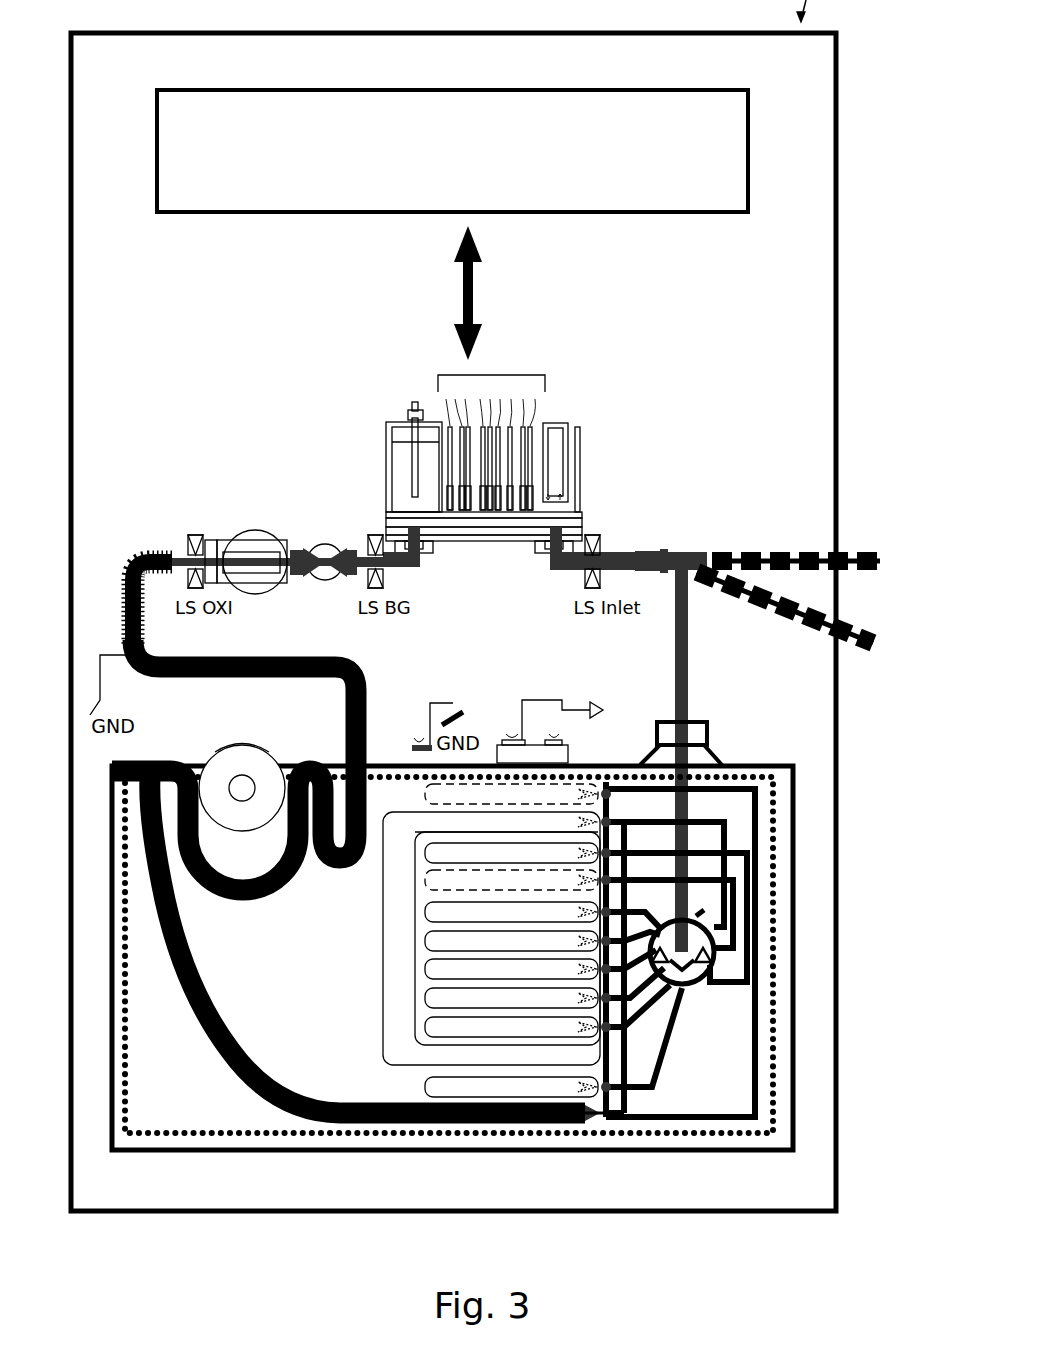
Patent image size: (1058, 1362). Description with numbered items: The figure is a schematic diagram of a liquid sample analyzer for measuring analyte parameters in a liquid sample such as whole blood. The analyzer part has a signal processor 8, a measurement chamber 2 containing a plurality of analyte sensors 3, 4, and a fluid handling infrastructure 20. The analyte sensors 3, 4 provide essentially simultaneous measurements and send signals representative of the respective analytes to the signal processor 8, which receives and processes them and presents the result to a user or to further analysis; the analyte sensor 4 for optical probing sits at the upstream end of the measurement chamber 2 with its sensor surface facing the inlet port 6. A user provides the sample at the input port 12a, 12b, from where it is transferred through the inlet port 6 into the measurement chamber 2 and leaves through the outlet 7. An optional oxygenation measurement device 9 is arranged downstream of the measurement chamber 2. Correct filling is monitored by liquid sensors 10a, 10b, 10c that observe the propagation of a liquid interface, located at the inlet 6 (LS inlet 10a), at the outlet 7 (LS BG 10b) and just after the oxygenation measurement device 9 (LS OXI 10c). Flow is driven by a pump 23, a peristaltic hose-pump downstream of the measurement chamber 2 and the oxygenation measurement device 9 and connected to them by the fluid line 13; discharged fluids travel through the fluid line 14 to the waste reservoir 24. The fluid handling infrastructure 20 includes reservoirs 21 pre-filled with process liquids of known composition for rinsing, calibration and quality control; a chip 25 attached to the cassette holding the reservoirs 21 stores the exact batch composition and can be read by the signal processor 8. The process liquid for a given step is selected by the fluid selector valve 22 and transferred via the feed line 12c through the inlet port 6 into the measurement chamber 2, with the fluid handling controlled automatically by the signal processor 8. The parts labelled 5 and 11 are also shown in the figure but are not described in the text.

The measurement chamber 2 is at (444, 462).
The analyte sensors 3 is at (517, 374).
The analyte sensor 4 is at (557, 433).
The reference electrode compartment 5 is at (405, 452).
The inlet port 6 is at (552, 562).
The outlet 7 is at (420, 556).
The signal processor 8 is at (672, 213).
The oxygenation measurement device 9 is at (250, 540).
The liquid sensor 10a is at (598, 534).
The liquid sensor 10b is at (375, 534).
The liquid sensor 10c is at (194, 534).
The connector 11 is at (325, 578).
The input port 12a is at (770, 550).
The input port 12b is at (780, 603).
The feed line 12c is at (688, 670).
The fluid line 13 is at (133, 583).
The fluid line 14 is at (207, 1003).
The fluid handling infrastructure 20 is at (765, 766).
The reservoirs 21 is at (447, 1087).
The fluid selector valve 22 is at (710, 1075).
The pump 23 is at (237, 783).
The waste reservoir 24 is at (405, 845).
The chip 25 is at (520, 752).